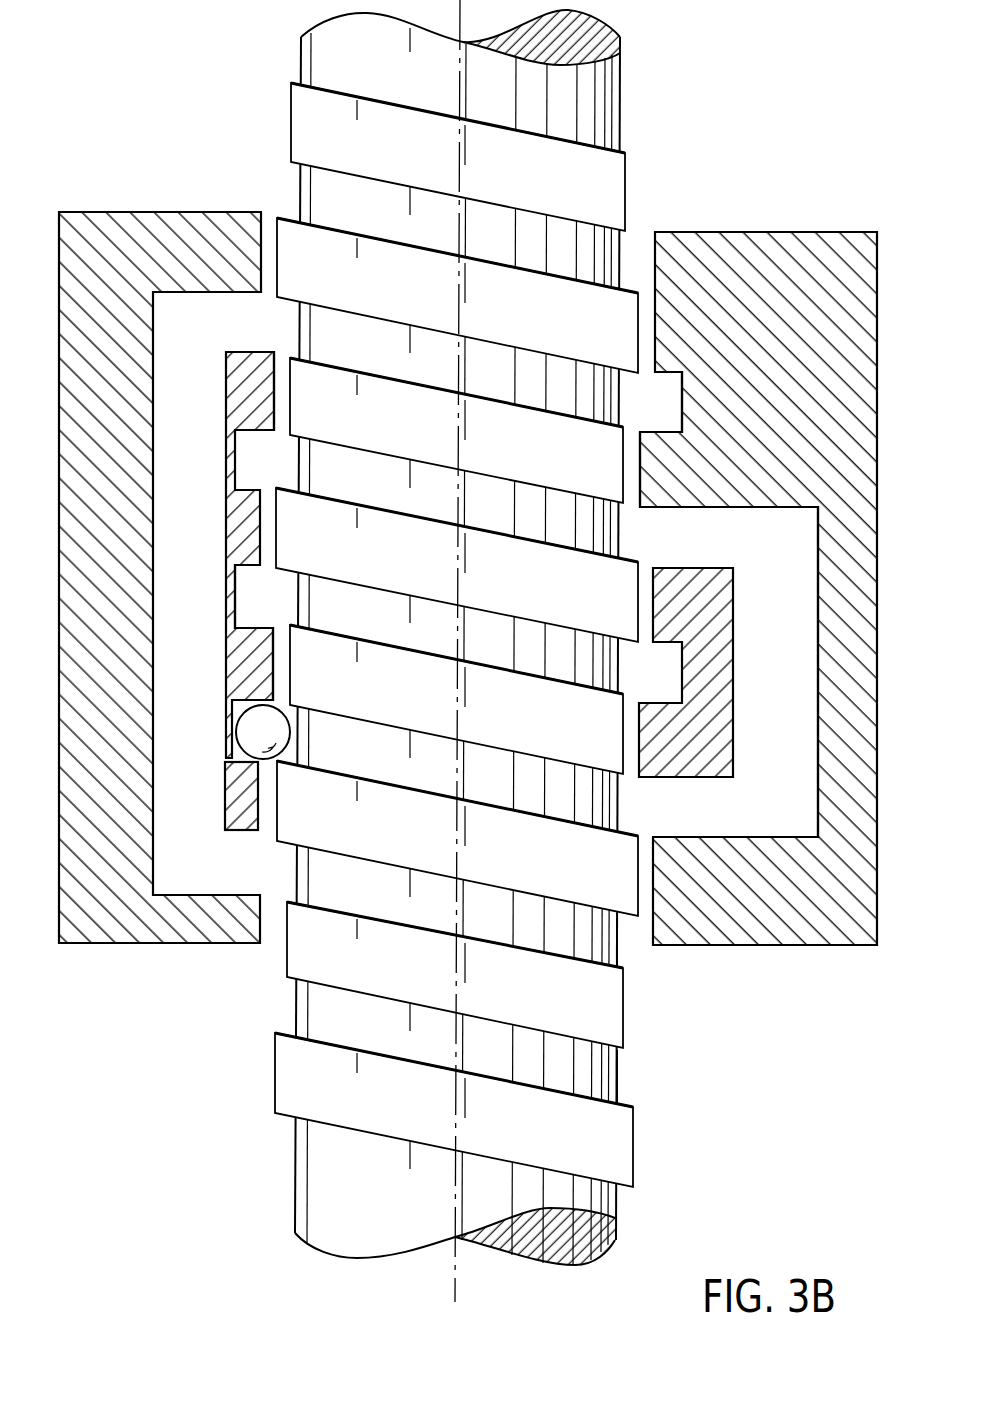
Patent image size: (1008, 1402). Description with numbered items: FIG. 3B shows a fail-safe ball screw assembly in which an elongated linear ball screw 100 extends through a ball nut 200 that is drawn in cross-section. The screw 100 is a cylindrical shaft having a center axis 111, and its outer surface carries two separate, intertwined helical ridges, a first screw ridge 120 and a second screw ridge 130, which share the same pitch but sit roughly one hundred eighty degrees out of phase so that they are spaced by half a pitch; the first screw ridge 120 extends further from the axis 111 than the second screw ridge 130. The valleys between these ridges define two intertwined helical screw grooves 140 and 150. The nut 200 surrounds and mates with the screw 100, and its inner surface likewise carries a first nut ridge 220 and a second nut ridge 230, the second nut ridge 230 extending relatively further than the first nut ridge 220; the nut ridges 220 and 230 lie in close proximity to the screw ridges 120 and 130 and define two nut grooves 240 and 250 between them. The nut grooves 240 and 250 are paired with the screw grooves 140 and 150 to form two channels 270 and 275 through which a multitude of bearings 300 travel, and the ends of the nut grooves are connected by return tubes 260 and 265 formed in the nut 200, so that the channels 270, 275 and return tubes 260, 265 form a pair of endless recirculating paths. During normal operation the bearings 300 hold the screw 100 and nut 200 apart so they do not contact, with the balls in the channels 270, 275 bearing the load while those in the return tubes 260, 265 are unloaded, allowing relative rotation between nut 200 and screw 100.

The ball screw 100 is at (623, 117).
The center axis 111 is at (453, 1160).
The first screw ridge 120 is at (635, 1142).
The second screw ridge 130 is at (625, 1008).
The first screw groove 140 is at (617, 943).
The second screw groove 150 is at (618, 1073).
The ball nut 200 is at (732, 947).
The first nut ridge 220 is at (258, 525).
The second nut ridge 230 is at (633, 468).
The first nut groove 240 is at (232, 704).
The second nut groove 250 is at (245, 593).
The return tube 260 is at (185, 875).
The return tube 265 is at (788, 793).
The channel 270 is at (650, 395).
The channel 275 is at (260, 452).
The bearings 300 is at (231, 760).